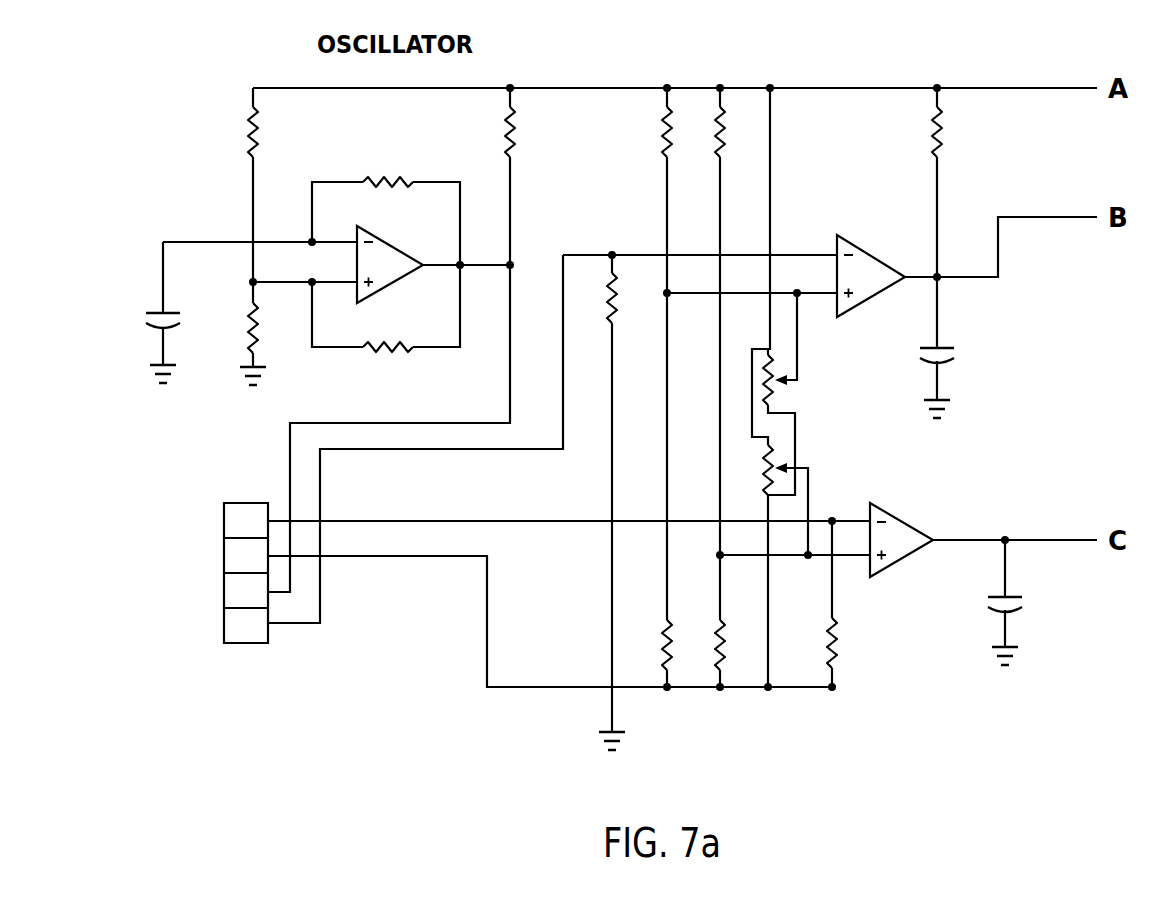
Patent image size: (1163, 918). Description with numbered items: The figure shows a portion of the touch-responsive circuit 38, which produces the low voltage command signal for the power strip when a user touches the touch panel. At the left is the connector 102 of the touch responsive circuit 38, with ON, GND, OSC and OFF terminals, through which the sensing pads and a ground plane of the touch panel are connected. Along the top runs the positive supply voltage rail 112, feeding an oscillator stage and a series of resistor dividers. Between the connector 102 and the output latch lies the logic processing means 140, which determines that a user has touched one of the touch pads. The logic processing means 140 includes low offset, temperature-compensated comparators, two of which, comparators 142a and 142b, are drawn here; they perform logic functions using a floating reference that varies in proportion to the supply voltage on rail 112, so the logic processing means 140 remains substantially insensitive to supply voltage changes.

The touch-responsive circuit 38 is at (720, 37).
The positive supply voltage rail 112 is at (842, 88).
The logic processing means 140 is at (1025, 428).
The comparator 142a is at (875, 259).
The comparator 142b is at (907, 523).
The connector 102 is at (247, 645).